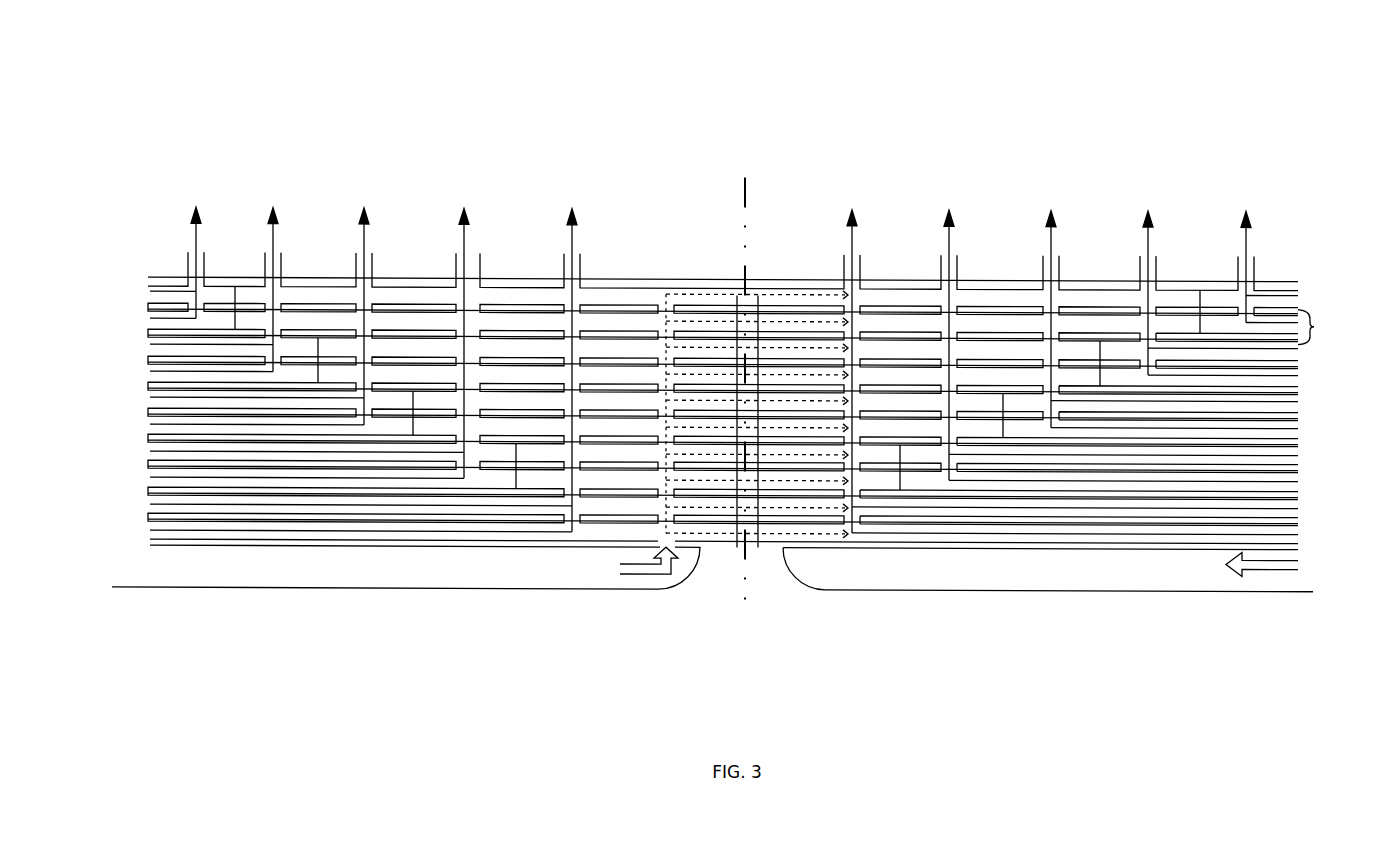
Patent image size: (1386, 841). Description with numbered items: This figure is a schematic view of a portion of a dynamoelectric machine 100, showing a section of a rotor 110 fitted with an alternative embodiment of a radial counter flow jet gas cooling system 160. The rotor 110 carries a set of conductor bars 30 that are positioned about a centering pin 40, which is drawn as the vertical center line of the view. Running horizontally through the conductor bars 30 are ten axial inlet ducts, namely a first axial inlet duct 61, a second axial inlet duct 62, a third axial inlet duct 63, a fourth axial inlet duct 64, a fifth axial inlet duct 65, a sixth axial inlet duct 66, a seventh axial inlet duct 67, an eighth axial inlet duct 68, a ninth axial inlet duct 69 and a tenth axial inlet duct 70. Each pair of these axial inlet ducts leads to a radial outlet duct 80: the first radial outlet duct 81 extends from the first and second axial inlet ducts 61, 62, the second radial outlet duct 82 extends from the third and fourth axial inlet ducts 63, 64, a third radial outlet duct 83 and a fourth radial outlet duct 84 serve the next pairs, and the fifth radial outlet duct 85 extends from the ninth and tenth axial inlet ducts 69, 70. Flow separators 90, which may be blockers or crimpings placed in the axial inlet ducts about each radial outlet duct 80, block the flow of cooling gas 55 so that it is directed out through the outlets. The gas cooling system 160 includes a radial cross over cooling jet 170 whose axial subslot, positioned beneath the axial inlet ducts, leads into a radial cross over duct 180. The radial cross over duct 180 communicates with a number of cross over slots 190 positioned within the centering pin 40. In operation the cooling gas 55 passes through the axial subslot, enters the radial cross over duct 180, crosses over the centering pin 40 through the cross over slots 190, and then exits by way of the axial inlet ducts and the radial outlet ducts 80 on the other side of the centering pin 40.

The dynamoelectric machine 100 is at (147, 86).
The conductor bars 30 is at (1314, 322).
The centering pin 40 is at (746, 175).
The cooling gas 55 is at (1246, 250).
The first axial inlet duct 61 is at (150, 530).
The second axial inlet duct 62 is at (150, 504).
The third axial inlet duct 63 is at (150, 477).
The fourth axial inlet duct 64 is at (150, 451).
The fifth axial inlet duct 65 is at (150, 424).
The sixth axial inlet duct 66 is at (150, 397).
The seventh axial inlet duct 67 is at (150, 371).
The eighth axial inlet duct 68 is at (150, 344).
The ninth axial inlet duct 69 is at (150, 318).
The tenth axial inlet duct 70 is at (150, 291).
The radial outlet duct 80 is at (566, 540).
The first radial outlet duct 81 is at (572, 242).
The second radial outlet duct 82 is at (464, 242).
The third radial outlet duct 83 is at (364, 242).
The fourth radial outlet duct 84 is at (273, 242).
The fifth radial outlet duct 85 is at (196, 242).
The flow separators 90 is at (1200, 323).
The rotor 110 is at (407, 589).
The radial counter flow jet gas cooling system 160 is at (332, 577).
The radial cross over cooling jet 170 is at (673, 595).
The radial cross over duct 180 is at (666, 310).
The cross over slots 190 is at (746, 330).